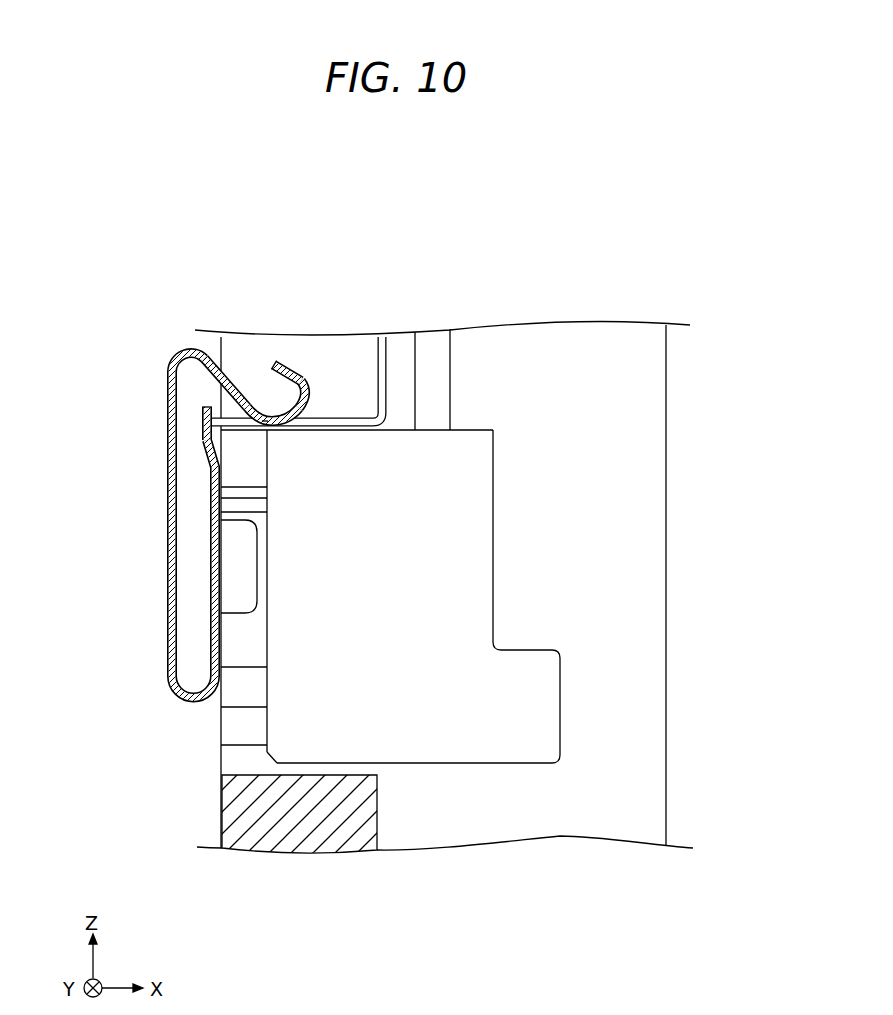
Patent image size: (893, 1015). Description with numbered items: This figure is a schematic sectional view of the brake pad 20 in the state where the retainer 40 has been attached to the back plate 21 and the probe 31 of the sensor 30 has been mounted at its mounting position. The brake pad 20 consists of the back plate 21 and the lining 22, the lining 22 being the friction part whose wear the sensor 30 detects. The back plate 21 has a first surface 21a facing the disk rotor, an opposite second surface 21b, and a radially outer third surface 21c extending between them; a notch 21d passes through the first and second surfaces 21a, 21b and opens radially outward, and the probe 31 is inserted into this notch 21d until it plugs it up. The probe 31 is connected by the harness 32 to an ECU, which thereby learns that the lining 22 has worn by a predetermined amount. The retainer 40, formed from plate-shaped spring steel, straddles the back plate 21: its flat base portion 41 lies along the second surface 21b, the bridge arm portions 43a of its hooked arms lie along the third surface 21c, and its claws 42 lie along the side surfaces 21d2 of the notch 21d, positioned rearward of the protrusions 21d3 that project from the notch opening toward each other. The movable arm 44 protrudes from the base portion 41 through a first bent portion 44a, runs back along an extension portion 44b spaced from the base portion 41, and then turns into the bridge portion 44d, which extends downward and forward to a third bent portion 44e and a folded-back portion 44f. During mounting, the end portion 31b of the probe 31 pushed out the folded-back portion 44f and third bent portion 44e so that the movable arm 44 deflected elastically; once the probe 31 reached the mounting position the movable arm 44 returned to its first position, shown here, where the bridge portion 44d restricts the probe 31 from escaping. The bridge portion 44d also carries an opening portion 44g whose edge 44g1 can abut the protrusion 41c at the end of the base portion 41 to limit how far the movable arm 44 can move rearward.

The brake pad 20 is at (571, 229).
The back plate 21 is at (295, 856).
The first surface 21a is at (385, 362).
The second surface 21b is at (225, 723).
The third surface 21c is at (240, 415).
The notch 21d is at (345, 773).
The side surface of the notch 21d2 is at (233, 633).
The protrusion 21d3 is at (230, 460).
The lining 22 is at (648, 387).
The sensor 30 is at (561, 696).
The probe 31 is at (475, 538).
The end portion 31b is at (267, 744).
The harness 32 is at (452, 353).
The retainer 40 is at (200, 485).
The base portion 41 is at (212, 497).
The protrusion 41c is at (200, 410).
The claw 42 is at (230, 573).
The bridge arm portion 43a is at (350, 416).
The movable arm 44 is at (167, 432).
The first bent portion 44a is at (193, 702).
The extension portion 44b is at (177, 525).
The bridge portion 44d is at (228, 378).
The third bent portion 44e is at (306, 412).
The folded-back portion 44f is at (292, 378).
The opening portion 44g is at (266, 347).
The edge 44g1 is at (265, 420).